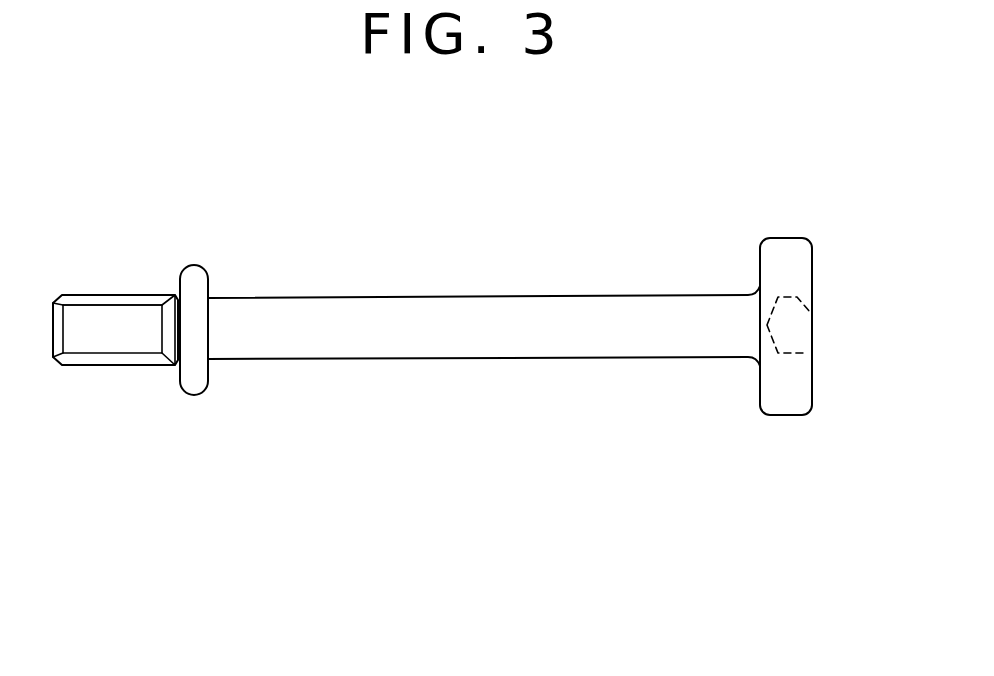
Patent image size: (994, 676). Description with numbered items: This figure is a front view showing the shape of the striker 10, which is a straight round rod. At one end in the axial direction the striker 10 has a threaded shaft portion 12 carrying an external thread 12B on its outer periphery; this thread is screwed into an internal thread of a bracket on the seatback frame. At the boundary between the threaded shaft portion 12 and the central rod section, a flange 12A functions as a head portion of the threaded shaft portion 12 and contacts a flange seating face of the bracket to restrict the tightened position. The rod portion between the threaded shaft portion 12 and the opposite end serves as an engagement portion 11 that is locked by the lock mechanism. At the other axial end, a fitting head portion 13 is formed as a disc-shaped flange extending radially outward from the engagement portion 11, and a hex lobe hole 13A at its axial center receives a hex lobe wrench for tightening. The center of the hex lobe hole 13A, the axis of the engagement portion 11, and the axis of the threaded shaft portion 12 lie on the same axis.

The striker 10 is at (277, 240).
The engagement portion 11 is at (516, 318).
The threaded shaft portion 12 is at (90, 325).
The flange 12A is at (193, 290).
The external thread 12B is at (128, 302).
The fitting head portion 13 is at (787, 255).
The hex lobe hole 13A is at (813, 315).